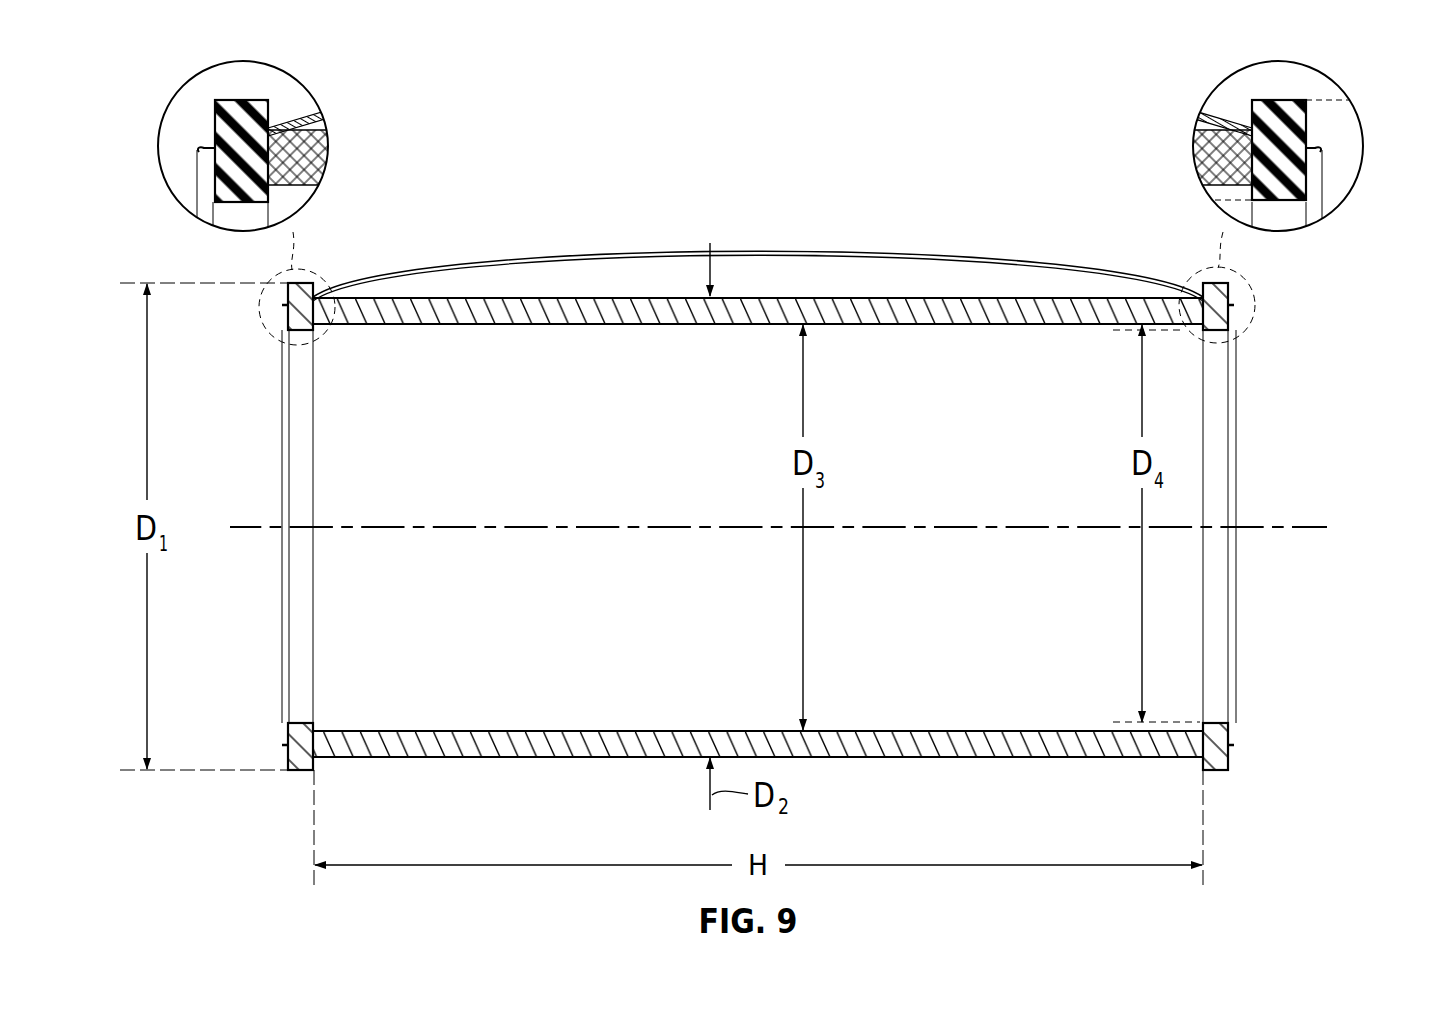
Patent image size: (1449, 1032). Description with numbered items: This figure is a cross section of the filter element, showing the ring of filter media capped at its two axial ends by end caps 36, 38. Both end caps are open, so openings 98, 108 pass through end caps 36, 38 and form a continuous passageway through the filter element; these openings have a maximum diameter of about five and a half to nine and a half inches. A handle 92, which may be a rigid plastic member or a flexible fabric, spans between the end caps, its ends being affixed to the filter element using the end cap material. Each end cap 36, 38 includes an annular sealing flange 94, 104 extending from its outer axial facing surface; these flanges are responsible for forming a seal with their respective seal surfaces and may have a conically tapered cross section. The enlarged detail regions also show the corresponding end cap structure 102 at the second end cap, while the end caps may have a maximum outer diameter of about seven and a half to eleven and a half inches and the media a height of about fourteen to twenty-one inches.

The end cap 36 is at (228, 100).
The end cap 38 is at (1292, 100).
The handle 92 is at (527, 256).
The annular sealing flange 94 is at (201, 150).
The opening 98 is at (306, 416).
The second ring face 102 is at (1310, 100).
The annular sealing flange 104 is at (1316, 150).
The opening 108 is at (1212, 415).